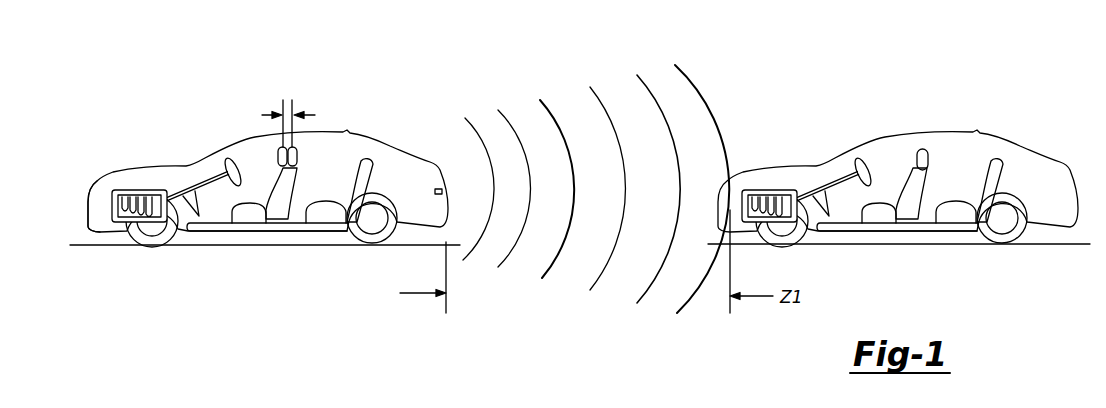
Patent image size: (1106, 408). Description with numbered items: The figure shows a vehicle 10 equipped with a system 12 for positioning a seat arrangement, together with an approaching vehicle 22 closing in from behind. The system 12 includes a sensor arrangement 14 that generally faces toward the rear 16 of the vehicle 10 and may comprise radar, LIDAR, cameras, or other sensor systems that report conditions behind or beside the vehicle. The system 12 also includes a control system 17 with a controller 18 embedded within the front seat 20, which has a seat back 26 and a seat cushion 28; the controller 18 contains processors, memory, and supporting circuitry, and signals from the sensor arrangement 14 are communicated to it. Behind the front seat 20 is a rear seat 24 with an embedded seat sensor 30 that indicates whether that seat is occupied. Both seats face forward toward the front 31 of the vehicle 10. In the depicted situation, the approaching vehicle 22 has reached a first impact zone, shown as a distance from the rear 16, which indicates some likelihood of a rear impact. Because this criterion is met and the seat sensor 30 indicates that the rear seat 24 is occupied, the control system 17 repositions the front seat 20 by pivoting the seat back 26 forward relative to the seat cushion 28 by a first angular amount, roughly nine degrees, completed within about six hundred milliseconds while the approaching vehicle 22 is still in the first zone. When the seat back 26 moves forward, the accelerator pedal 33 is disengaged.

The vehicle 10 is at (158, 87).
The system for positioning a seat arrangement 12 is at (346, 116).
The sensor arrangement 14 is at (446, 191).
The rear 16 is at (445, 193).
The control system 17 is at (328, 248).
The controller 18 is at (269, 220).
The front seat 20 is at (249, 245).
The approaching vehicle 22 is at (1019, 114).
The rear seat 24 is at (371, 156).
The seat back 26 is at (265, 189).
The seat cushion 28 is at (228, 214).
The seat sensor 30 is at (324, 205).
The front 31 is at (93, 188).
The accelerator pedal 33 is at (168, 221).